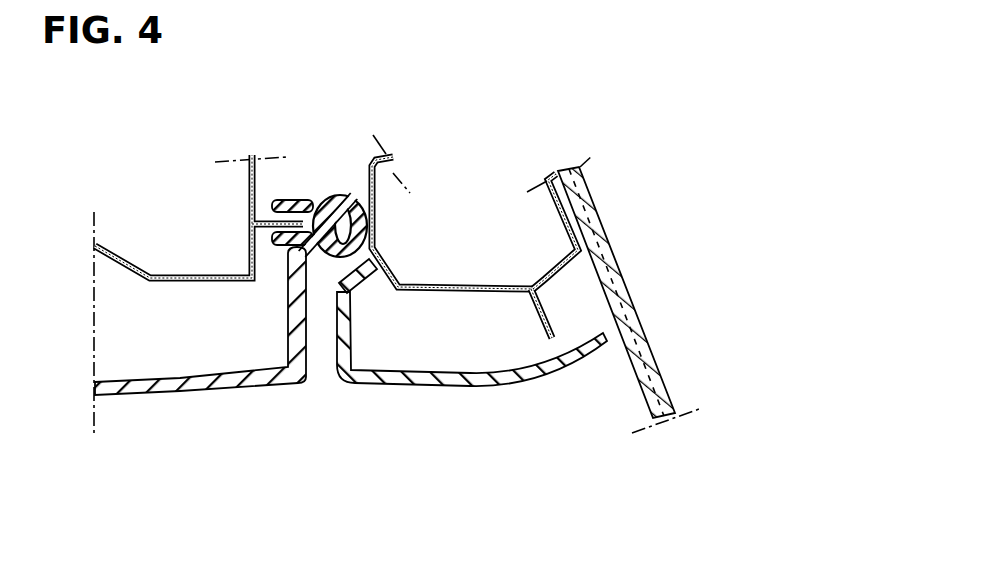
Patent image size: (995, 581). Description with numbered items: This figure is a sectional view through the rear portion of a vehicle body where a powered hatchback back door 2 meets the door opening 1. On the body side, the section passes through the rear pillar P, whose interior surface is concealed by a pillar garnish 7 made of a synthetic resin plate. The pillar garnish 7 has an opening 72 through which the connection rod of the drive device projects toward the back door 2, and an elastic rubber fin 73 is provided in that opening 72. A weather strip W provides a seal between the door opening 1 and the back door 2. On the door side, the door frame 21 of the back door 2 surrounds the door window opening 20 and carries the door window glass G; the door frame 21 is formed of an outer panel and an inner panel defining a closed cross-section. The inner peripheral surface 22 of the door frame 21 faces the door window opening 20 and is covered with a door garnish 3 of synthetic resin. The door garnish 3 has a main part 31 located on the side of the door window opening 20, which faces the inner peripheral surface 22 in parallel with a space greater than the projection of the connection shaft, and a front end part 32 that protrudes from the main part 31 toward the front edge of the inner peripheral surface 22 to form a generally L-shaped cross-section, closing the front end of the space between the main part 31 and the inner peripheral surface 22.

The door opening 1 is at (200, 383).
The back door 2 is at (570, 285).
The door garnish 3 is at (430, 410).
The pillar garnish 7 is at (133, 410).
The door window opening 20 is at (466, 389).
The door frame 21 is at (644, 256).
The inner peripheral surface 22 is at (475, 281).
The main part 31 is at (500, 388).
The front end part 32 is at (335, 320).
The opening 72 is at (225, 375).
The elastic rubber fin 73 is at (287, 304).
The door window glass G is at (611, 248).
The rear pillar P is at (186, 277).
The weather strip W is at (336, 193).